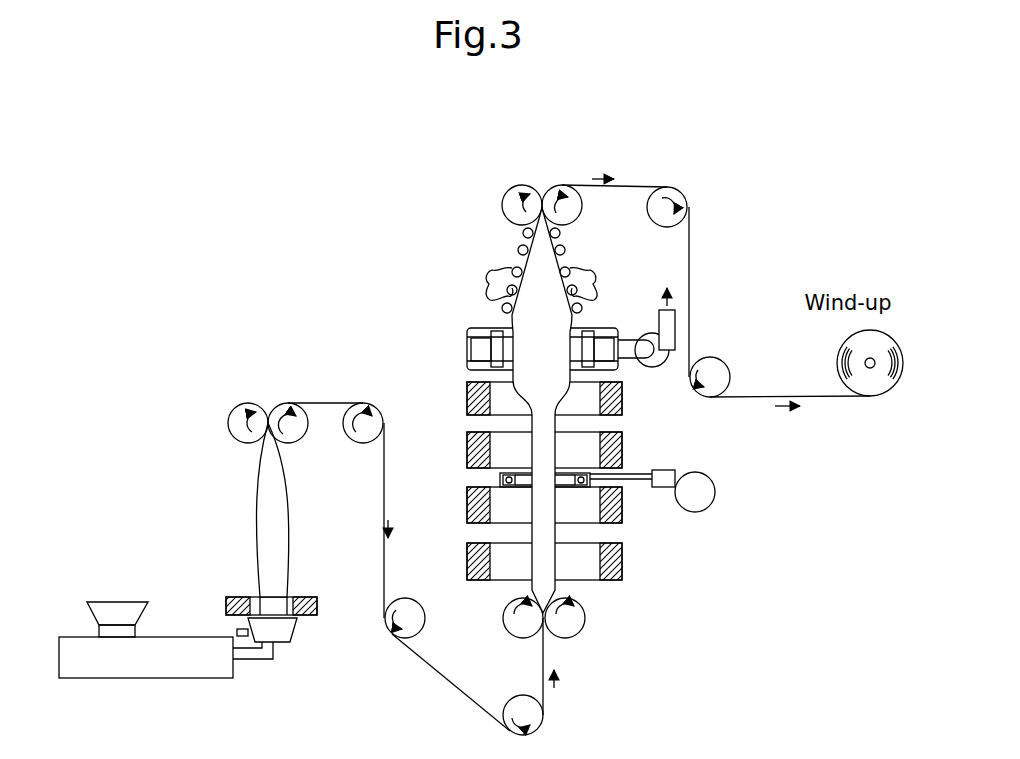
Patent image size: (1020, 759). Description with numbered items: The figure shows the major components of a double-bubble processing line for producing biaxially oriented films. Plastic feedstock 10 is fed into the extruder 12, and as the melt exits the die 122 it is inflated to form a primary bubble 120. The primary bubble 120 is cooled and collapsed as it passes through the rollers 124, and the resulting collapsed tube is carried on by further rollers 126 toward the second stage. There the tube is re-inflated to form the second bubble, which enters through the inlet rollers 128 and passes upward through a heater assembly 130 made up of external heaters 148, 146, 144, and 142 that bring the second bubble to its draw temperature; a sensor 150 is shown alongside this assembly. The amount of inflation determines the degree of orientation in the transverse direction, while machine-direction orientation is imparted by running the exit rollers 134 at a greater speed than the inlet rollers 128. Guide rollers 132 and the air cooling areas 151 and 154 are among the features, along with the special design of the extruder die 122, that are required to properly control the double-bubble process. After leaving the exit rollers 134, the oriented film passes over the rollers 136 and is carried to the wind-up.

The plastic feedstock 10 is at (115, 590).
The extruder 12 is at (166, 657).
The primary bubble 120 is at (285, 520).
The die 122 is at (306, 612).
The rollers 124 is at (237, 432).
The guide rollers 126 is at (358, 410).
The inlet rollers 128 is at (512, 637).
The ring assembly 130 is at (555, 479).
The guide rollers 132 is at (606, 282).
The exit rollers 134 is at (506, 198).
The guide rollers 136 is at (680, 190).
The external heater 142 is at (468, 402).
The external heater 144 is at (468, 454).
The external heater 146 is at (468, 511).
The external heater 148 is at (468, 567).
The sensor 150 is at (588, 486).
The air cooling area 151 is at (715, 492).
The air cooling area 154 is at (462, 341).